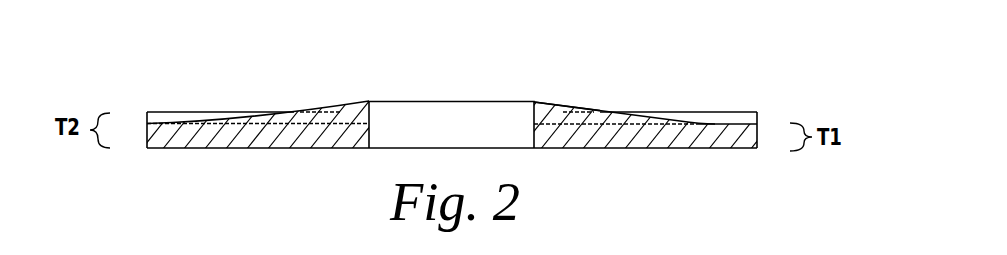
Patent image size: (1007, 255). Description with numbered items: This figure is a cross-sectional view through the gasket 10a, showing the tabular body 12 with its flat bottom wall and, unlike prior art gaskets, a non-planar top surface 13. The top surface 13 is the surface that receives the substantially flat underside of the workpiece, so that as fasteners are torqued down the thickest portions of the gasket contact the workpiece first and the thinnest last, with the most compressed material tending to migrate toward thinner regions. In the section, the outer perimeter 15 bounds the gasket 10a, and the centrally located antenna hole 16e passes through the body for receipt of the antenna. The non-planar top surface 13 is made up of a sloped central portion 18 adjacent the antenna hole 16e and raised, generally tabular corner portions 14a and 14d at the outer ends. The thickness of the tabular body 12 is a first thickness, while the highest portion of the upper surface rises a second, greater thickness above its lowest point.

The gasket 10a is at (790, 103).
The tabular body 12 is at (758, 135).
The non-planar top surface 13 is at (318, 106).
The raised tabular corner portion 14a is at (700, 112).
The raised tabular corner portion 14d is at (192, 112).
The perimeter 15 is at (147, 135).
The antenna hole 16e is at (410, 110).
The sloped central portion 18 is at (558, 102).